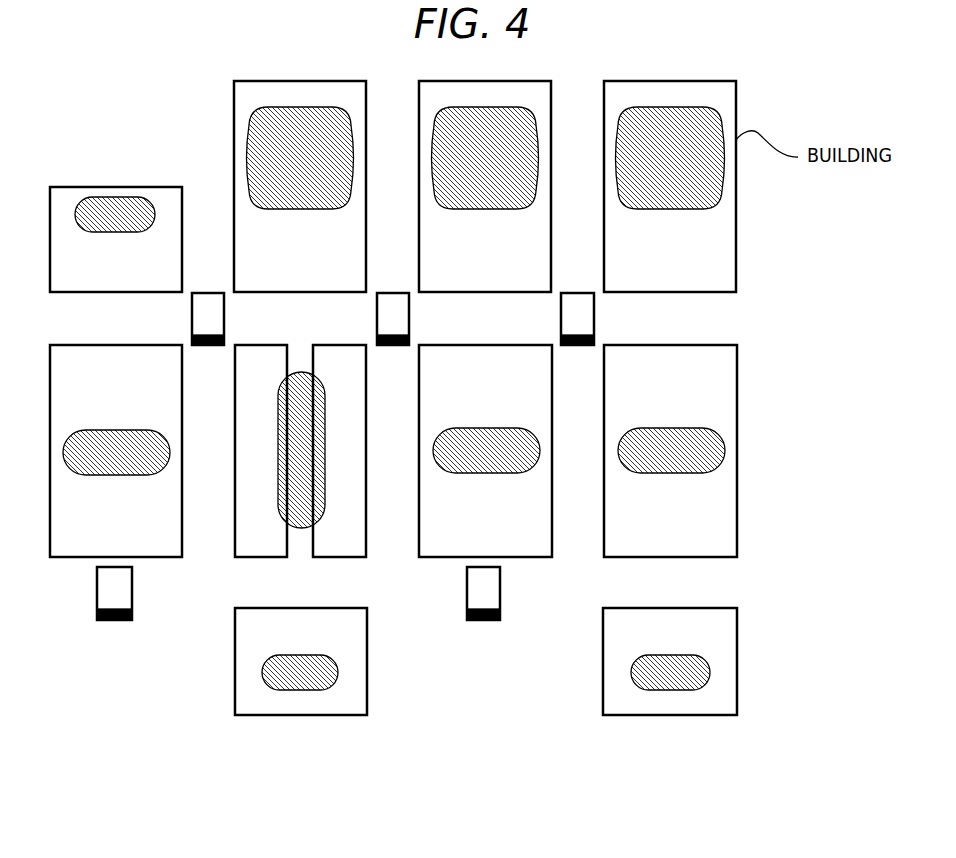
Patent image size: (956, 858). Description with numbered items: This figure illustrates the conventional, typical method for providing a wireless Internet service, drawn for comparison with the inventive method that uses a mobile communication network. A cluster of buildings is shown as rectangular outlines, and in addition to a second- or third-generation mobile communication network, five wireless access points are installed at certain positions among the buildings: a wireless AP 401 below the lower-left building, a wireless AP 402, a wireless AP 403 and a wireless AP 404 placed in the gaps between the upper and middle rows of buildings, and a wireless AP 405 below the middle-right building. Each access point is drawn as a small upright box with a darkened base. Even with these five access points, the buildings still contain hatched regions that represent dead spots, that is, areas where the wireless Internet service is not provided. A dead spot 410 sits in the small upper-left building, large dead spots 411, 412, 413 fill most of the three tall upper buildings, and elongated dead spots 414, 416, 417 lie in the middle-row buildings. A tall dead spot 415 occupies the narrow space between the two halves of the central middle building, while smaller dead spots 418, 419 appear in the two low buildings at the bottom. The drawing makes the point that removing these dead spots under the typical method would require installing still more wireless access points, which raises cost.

The wireless AP 401 is at (117, 620).
The wireless AP 402 is at (222, 319).
The wireless AP 403 is at (407, 319).
The wireless AP 404 is at (592, 319).
The wireless AP 405 is at (490, 620).
The dead spot 410 is at (110, 197).
The dead spot 411 is at (293, 209).
The dead spot 412 is at (478, 209).
The dead spot 413 is at (664, 209).
The dead spot 414 is at (113, 430).
The dead spot 415 is at (297, 528).
The dead spot 416 is at (483, 428).
The dead spot 417 is at (670, 428).
The dead spot 418 is at (298, 655).
The dead spot 419 is at (670, 655).